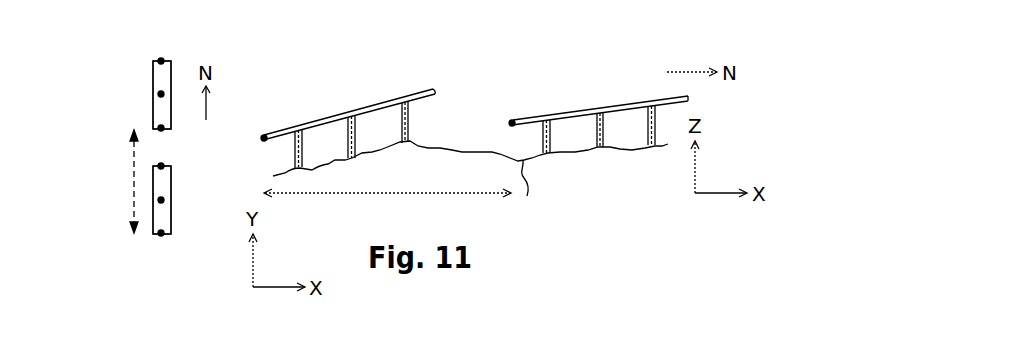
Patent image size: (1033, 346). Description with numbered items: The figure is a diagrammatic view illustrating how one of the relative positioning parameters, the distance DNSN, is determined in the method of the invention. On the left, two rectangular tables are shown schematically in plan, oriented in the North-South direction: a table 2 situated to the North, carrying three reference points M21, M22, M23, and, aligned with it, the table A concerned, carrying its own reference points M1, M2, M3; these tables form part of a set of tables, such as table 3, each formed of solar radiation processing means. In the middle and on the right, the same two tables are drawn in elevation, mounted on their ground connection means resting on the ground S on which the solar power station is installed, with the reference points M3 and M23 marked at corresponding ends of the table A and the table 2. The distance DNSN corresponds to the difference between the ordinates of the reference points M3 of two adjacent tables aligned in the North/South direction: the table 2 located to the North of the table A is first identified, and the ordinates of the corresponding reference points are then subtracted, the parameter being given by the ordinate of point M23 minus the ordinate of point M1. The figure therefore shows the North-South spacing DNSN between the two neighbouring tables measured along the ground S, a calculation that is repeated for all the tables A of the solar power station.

The table 2 is at (153, 85).
The table 3 is at (194, 112).
The table A is at (164, 186).
The reference point M1 is at (162, 165).
The reference point M2 is at (163, 200).
The reference point M3 is at (161, 235).
The reference point M21 is at (160, 61).
The reference point M22 is at (160, 94).
The reference point M23 is at (160, 128).
The distance DNSN is at (386, 194).
The ground S is at (531, 189).